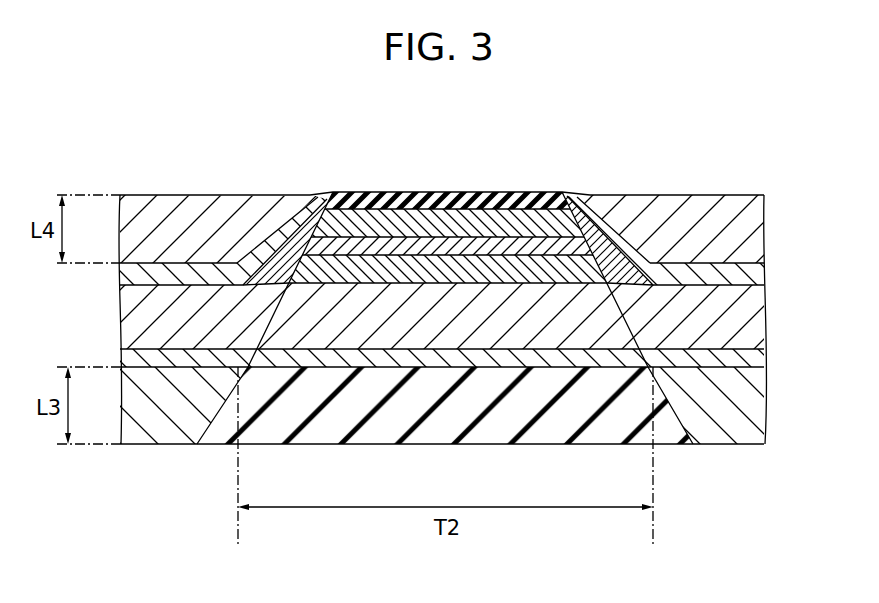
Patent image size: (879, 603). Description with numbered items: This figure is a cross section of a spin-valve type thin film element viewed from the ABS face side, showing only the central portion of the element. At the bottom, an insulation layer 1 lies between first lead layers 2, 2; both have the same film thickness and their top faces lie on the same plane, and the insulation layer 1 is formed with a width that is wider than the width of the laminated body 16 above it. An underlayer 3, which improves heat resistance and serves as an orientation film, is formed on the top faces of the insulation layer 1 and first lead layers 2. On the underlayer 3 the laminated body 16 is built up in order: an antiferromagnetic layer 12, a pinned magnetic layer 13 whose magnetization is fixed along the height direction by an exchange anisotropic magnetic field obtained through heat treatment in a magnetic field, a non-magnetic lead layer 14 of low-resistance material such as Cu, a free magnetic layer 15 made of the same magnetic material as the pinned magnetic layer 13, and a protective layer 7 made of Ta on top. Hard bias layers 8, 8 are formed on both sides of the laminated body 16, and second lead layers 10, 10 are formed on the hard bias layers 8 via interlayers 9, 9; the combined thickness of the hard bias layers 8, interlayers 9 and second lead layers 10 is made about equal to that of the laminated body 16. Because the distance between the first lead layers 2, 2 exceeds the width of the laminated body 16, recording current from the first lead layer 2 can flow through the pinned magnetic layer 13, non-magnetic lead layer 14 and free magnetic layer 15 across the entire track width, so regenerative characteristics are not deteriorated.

The insulation layer 1 is at (545, 425).
The first lead layer 2 is at (738, 390).
The underlayer 3 is at (750, 355).
The protective layer 7 is at (381, 200).
The hard bias layer 8 is at (130, 315).
The interlayer 9 is at (135, 268).
The second lead layer 10 is at (181, 205).
The antiferromagnetic layer 12 is at (536, 297).
The pinned magnetic layer 13 is at (507, 268).
The non-magnetic lead layer 14 is at (455, 243).
The free magnetic layer 15 is at (421, 230).
The laminated body 16 is at (330, 176).